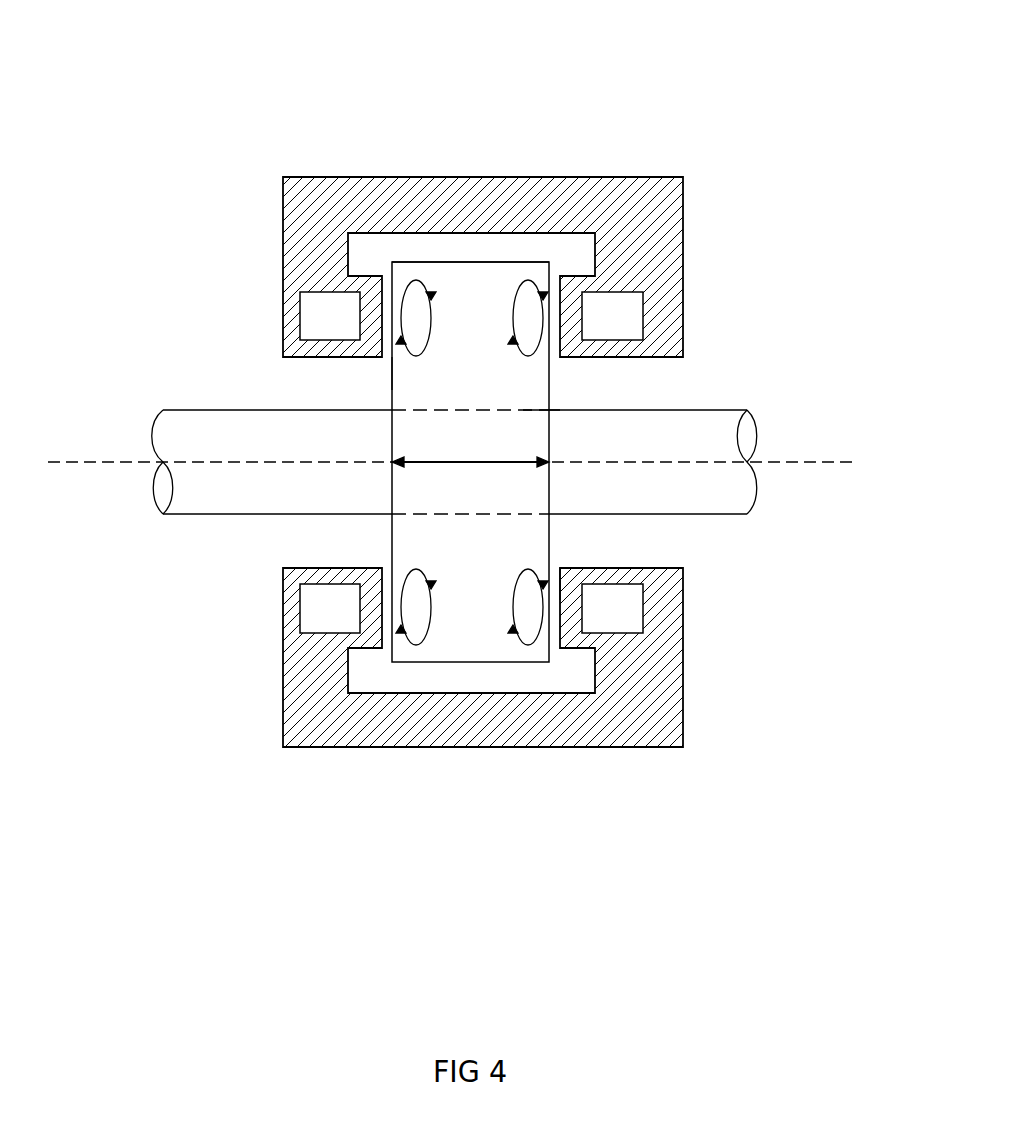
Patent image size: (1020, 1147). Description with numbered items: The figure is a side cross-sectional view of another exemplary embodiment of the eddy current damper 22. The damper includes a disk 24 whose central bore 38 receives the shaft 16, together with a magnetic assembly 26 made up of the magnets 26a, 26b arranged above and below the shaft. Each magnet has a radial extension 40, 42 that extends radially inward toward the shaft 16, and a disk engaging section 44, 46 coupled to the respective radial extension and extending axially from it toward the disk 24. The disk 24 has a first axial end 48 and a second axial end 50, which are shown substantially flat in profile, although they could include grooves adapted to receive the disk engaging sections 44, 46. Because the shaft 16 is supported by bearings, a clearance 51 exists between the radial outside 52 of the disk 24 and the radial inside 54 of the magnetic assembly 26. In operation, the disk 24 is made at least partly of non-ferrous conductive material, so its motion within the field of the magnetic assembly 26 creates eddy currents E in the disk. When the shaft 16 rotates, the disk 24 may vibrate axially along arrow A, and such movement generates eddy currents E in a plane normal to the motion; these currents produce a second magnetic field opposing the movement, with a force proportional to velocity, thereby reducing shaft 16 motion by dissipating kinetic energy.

The shaft 16 is at (730, 410).
The eddy current damper 22 is at (712, 74).
The disk 24 is at (506, 555).
The magnetic assembly 26 is at (536, 434).
The magnet 26a is at (683, 258).
The magnet 26b is at (683, 655).
The central bore 38 is at (523, 410).
The radial extension 40 is at (683, 333).
The radial extension 42 is at (300, 325).
The disk engaging section 44 is at (577, 357).
The disk engaging section 46 is at (335, 357).
The first axial end 48 is at (392, 372).
The second axial end 50 is at (560, 568).
The clearance 51 is at (465, 245).
The radial outside 52 is at (467, 259).
The radial inside 54 is at (425, 236).
The arrow A is at (505, 464).
The eddy currents E is at (432, 310).